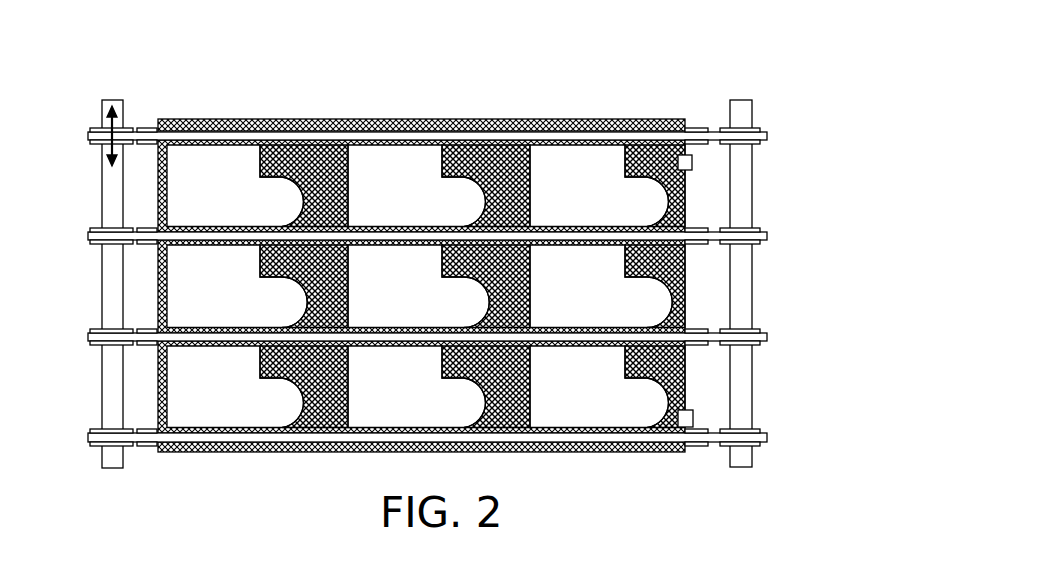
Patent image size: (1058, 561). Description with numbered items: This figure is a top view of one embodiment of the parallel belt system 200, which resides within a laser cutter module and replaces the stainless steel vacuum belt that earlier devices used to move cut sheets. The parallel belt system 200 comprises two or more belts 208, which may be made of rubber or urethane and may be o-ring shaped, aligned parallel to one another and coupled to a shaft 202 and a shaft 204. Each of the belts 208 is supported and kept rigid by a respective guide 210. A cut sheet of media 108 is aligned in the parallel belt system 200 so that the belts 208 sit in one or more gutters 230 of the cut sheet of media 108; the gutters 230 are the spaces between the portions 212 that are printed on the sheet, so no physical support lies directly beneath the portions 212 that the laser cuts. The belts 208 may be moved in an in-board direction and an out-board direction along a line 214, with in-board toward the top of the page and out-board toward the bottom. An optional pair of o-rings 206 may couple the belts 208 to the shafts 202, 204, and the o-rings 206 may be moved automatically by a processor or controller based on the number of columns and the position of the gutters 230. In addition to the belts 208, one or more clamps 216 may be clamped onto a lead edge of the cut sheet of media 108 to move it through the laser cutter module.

The parallel belt system 200 is at (430, 93).
The shaft 202 is at (108, 100).
The shaft 204 is at (742, 101).
The o-rings 206 is at (98, 127).
The belts 208 is at (768, 136).
The guide 210 is at (697, 127).
The portions 212 is at (275, 175).
The line 214 is at (118, 121).
The clamps 216 is at (693, 166).
The gutters 230 is at (513, 140).
The cut sheet media 108 is at (688, 294).